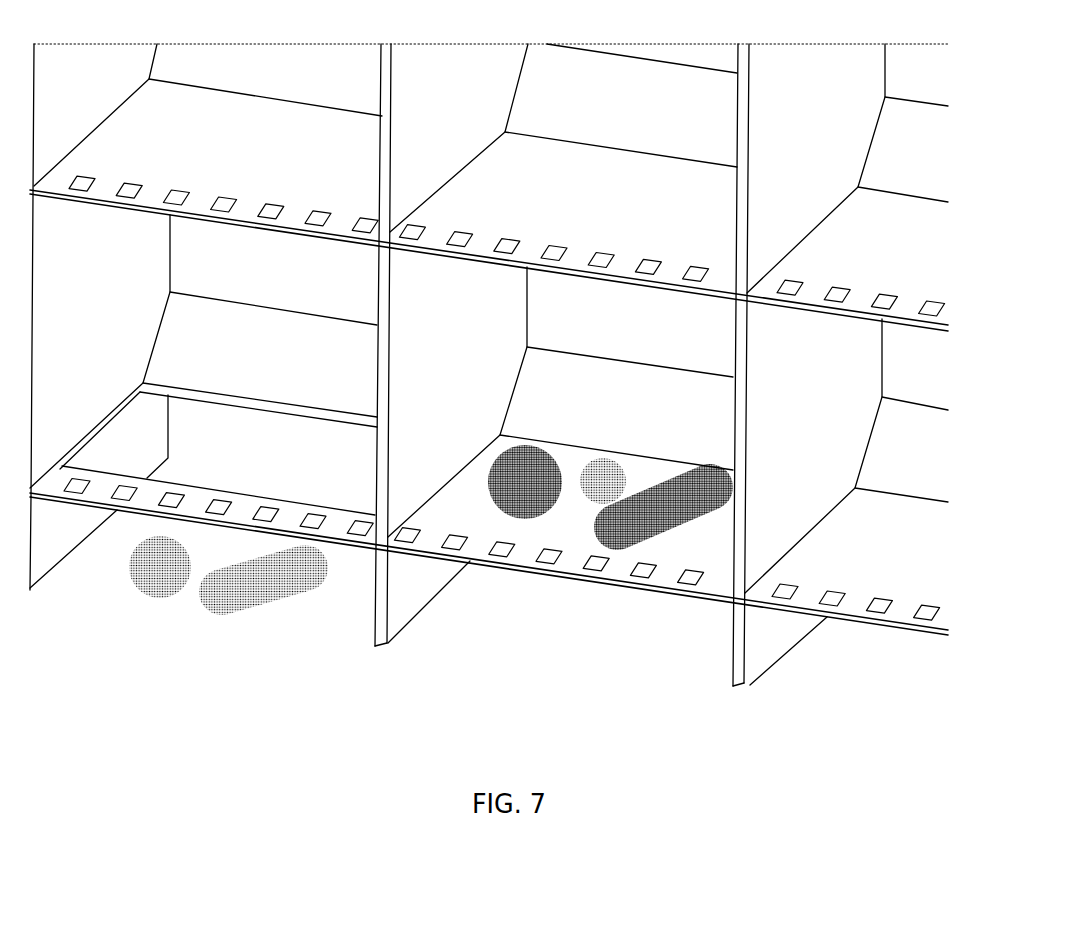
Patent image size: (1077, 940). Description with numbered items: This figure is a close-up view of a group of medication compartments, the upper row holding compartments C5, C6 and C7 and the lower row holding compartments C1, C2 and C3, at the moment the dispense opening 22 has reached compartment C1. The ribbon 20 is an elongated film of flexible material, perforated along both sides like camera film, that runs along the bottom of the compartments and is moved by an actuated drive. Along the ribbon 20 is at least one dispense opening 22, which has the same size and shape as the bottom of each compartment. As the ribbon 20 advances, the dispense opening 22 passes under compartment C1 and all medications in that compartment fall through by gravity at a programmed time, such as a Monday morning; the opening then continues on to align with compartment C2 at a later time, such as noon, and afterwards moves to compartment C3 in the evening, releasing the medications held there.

The ribbon 20 is at (548, 530).
The dispense opening 22 is at (320, 475).
The compartment 1 C1 is at (203, 351).
The compartment 2 C2 is at (560, 402).
The compartment 3 C3 is at (846, 456).
The compartment 5 C5 is at (208, 115).
The compartment 6 C6 is at (563, 138).
The compartment 7 C7 is at (847, 168).